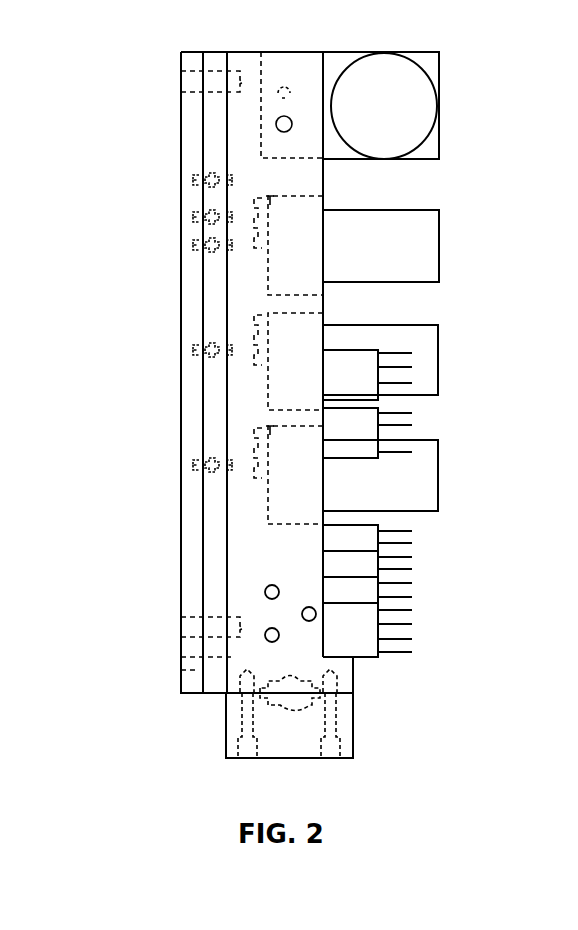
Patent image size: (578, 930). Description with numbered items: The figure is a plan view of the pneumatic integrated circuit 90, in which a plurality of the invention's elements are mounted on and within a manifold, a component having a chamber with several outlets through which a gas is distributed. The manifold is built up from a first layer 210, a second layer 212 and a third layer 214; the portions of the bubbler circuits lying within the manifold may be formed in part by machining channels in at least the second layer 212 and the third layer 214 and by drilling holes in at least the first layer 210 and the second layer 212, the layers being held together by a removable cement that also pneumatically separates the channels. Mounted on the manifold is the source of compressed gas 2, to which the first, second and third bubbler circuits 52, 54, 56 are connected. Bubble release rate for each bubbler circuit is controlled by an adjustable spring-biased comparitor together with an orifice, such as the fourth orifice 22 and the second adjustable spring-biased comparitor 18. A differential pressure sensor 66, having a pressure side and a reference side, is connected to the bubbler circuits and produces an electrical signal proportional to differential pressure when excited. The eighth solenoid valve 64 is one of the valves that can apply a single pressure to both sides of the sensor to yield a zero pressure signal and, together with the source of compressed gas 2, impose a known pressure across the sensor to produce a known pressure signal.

The pneumatic integrated circuit 90 is at (140, 143).
The third layer 214 is at (197, 52).
The second layer 212 is at (215, 52).
The first layer 210 is at (277, 52).
The source of compressed gas 2 is at (439, 117).
The fourth orifice 22 is at (197, 207).
The second adjustable spring-biased comparitor 18 is at (445, 240).
The first bubbler circuit 52 is at (266, 583).
The second bubbler circuit 54 is at (302, 613).
The third bubbler circuit 56 is at (266, 643).
The eighth solenoid valve 64 is at (413, 557).
The differential pressure sensor 66 is at (287, 723).